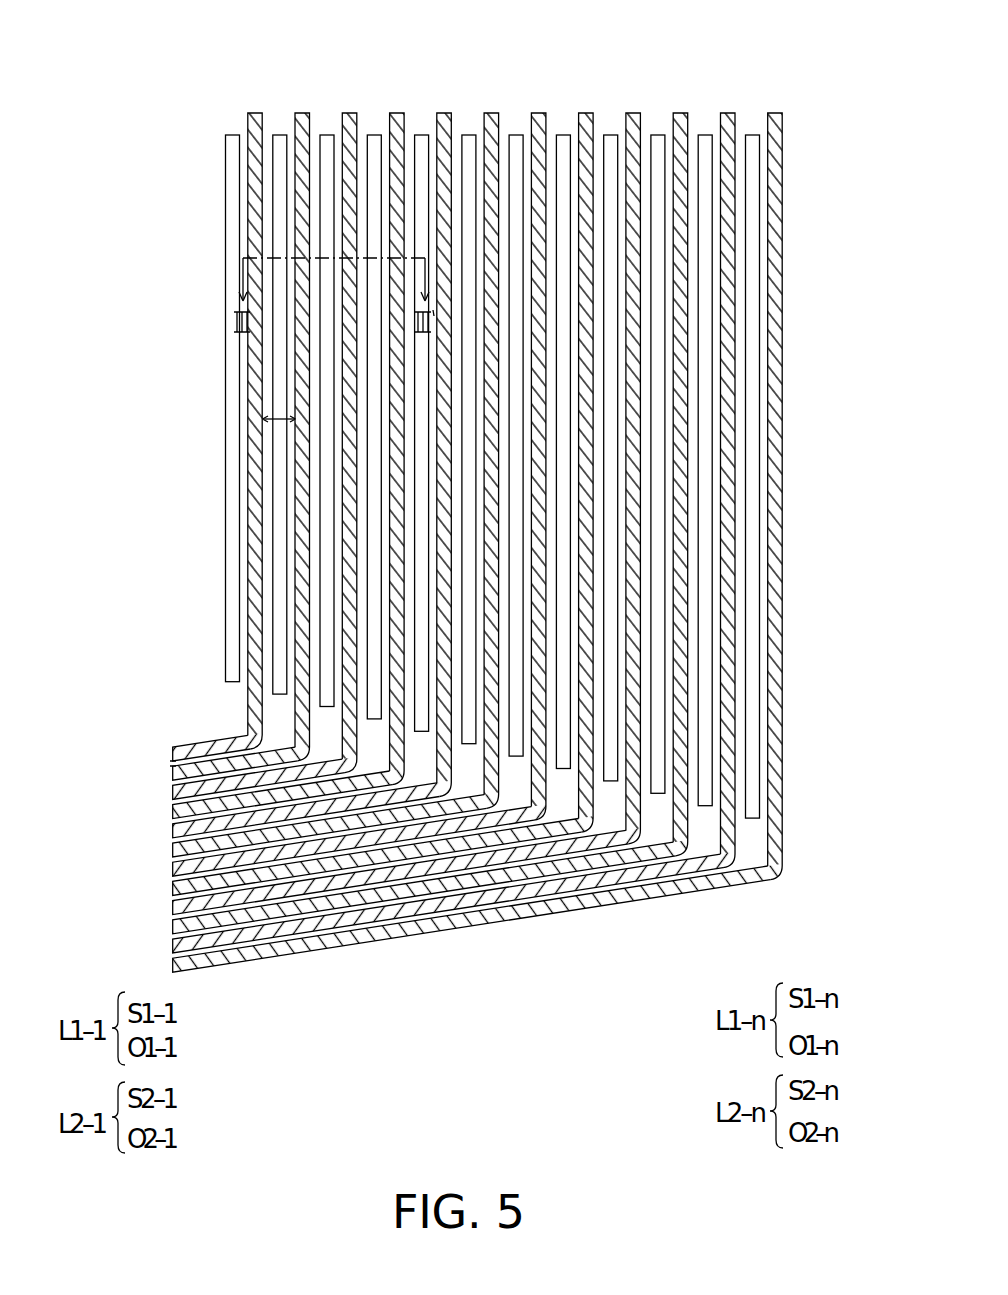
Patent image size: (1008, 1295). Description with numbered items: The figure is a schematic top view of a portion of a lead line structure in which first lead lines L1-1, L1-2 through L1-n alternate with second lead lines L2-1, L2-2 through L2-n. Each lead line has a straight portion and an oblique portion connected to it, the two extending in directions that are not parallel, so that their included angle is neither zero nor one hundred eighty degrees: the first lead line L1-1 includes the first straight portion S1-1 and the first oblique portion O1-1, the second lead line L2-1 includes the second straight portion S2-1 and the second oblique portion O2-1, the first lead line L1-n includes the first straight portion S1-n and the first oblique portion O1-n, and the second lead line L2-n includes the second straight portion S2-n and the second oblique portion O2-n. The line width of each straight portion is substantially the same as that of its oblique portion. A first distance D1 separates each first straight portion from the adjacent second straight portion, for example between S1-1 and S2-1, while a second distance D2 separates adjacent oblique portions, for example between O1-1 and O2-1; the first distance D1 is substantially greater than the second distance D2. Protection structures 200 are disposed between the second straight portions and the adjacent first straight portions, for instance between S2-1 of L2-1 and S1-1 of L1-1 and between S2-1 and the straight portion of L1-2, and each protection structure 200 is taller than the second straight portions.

The protection structure 200 is at (277, 186).
The first lead line L1-1 is at (174, 408).
The second lead line L2-1 is at (198, 421).
The first lead line L1-2 is at (350, 113).
The second lead line L2-2 is at (397, 113).
The first lead line L1-n is at (525, 507).
The second lead line L2-n is at (525, 497).
The first straight portion S1-1 is at (257, 487).
The second straight portion S2-1 is at (300, 364).
The first straight portion S1-n is at (733, 420).
The second straight portion S2-n is at (773, 487).
The first oblique portion O1-1 is at (173, 752).
The second oblique portion O2-1 is at (173, 773).
The first oblique portion O1-n is at (620, 880).
The second oblique portion O2-n is at (710, 883).
The first distance D1 is at (280, 420).
The second distance D2 is at (173, 764).